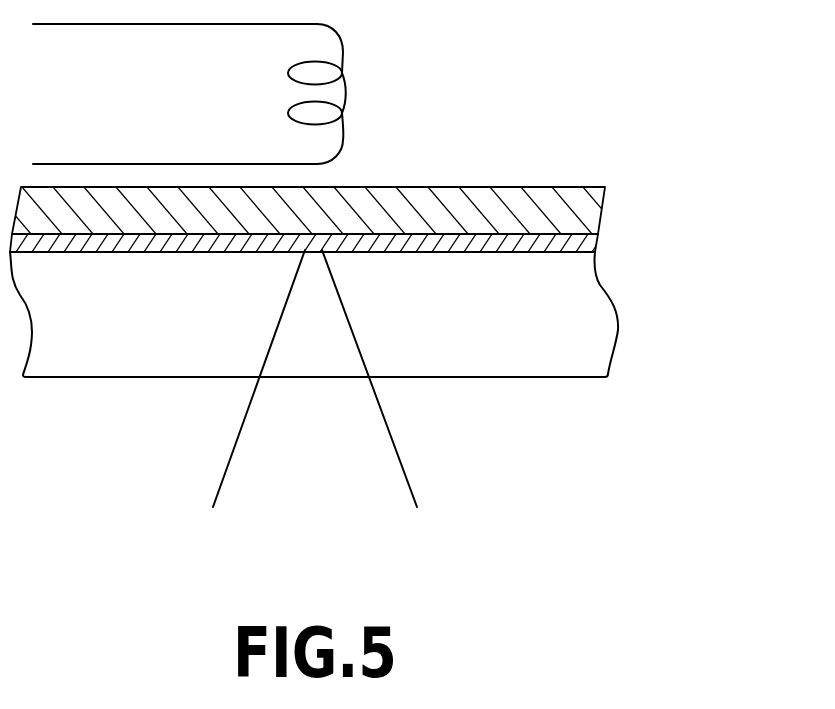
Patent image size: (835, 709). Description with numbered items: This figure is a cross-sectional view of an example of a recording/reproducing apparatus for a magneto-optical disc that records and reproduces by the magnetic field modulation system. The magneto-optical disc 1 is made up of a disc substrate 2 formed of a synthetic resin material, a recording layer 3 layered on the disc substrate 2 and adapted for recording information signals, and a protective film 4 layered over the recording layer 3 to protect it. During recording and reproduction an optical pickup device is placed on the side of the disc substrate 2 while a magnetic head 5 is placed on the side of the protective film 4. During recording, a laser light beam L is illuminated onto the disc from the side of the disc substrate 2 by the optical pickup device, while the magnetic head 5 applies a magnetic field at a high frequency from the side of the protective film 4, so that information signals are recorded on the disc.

The magneto-optical disc 1 is at (370, 225).
The disc substrate 2 is at (587, 329).
The recording layer 3 is at (586, 239).
The protective film 4 is at (588, 210).
The magnetic head 5 is at (346, 90).
The laser light beam L is at (397, 452).